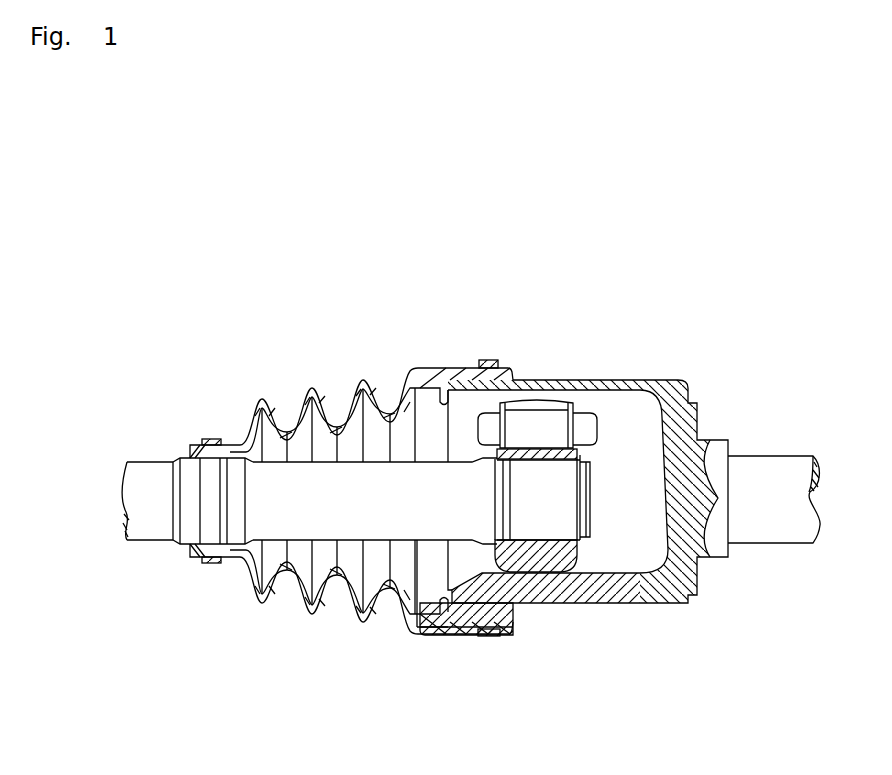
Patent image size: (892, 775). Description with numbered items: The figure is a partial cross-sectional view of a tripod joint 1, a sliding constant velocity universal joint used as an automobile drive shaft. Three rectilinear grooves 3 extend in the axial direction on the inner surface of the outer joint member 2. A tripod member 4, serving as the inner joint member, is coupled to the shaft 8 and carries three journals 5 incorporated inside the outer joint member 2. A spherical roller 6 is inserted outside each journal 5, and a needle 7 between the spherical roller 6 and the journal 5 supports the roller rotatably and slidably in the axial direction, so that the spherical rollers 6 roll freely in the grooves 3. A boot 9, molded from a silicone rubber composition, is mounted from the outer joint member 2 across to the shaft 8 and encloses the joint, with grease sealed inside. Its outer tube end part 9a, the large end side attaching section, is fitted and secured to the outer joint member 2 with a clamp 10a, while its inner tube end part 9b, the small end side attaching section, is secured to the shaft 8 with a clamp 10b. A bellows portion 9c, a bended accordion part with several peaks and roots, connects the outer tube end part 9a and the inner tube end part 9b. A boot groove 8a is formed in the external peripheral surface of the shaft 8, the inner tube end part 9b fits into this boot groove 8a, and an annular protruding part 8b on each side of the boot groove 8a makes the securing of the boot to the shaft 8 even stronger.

The tripod joint 1 is at (327, 338).
The outer joint member 2 is at (678, 384).
The rectilinear grooves 3 is at (448, 368).
The tripod member 4 is at (543, 560).
The journals 5 is at (535, 422).
The spherical rollers 6 is at (467, 407).
The needle 7 is at (575, 423).
The shaft 8 is at (435, 520).
The boot groove 8a is at (190, 473).
The annular protruding part 8b is at (230, 472).
The boot 9 is at (285, 647).
The outer tube end part 9a is at (505, 368).
The inner tube end part 9b is at (193, 559).
The bellows portion of boot 9c is at (352, 612).
The clamp 10a is at (490, 636).
The clamp 10b is at (210, 558).